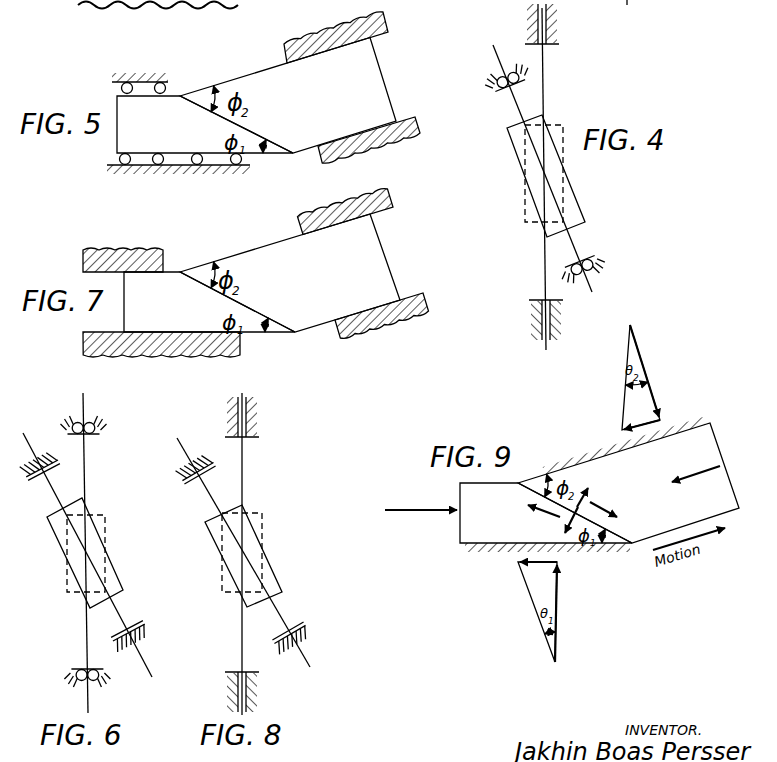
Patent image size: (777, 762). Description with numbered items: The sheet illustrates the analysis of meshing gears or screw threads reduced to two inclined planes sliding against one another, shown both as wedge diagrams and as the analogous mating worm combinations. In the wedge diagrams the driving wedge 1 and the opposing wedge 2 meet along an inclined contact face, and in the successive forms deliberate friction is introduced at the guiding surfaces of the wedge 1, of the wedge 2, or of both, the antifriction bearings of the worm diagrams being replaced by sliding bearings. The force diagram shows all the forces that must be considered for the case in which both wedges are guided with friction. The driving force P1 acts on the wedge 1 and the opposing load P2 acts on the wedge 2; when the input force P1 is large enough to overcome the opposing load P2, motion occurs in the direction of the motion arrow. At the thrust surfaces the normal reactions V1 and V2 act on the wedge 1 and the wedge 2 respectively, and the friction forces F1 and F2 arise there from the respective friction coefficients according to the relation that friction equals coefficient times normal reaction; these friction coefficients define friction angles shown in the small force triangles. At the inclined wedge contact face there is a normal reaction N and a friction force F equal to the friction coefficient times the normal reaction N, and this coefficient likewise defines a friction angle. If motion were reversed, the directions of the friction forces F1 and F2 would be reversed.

In FIG. 5, the wedge 1 is at (205, 124).
In FIG. 7, the wedge 1 is at (209, 302).
In FIG. 9, the wedge 1 is at (546, 513).
In FIG. 5, the wedge 2 is at (288, 96).
In FIG. 7, the wedge 2 is at (290, 273).
In FIG. 9, the wedge 2 is at (628, 483).
In FIG. 9, the driving force P1 is at (421, 499).
In FIG. 9, the opposing force P2 is at (696, 464).
In FIG. 9, the friction force F is at (571, 513).
In FIG. 9, the normal reaction N is at (585, 506).
In FIG. 9, the friction force F1 is at (526, 571).
In FIG. 9, the friction force F2 is at (628, 431).
In FIG. 9, the normal reaction V1 is at (569, 613).
In FIG. 9, the normal reaction V2 is at (653, 371).